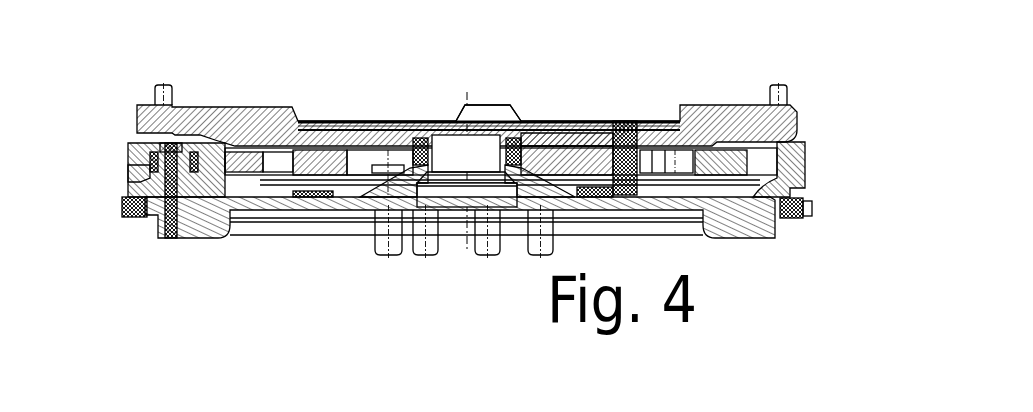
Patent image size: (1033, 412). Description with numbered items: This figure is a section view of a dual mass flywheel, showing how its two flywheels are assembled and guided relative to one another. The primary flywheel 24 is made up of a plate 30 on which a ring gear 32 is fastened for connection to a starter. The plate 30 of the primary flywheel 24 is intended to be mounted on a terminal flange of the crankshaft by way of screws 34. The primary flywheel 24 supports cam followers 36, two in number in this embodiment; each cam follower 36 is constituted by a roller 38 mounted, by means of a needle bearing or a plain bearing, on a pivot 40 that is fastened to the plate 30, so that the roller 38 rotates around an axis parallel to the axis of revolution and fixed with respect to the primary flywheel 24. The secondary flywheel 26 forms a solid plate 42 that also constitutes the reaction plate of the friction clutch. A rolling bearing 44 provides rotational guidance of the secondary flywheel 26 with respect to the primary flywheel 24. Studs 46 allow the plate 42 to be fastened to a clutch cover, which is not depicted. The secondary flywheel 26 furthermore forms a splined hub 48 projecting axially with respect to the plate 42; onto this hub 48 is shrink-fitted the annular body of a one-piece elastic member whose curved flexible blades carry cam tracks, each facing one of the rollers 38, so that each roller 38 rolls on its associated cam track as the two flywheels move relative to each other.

The primary flywheel 24 is at (813, 163).
The secondary flywheel 26 is at (807, 108).
The plate 30 is at (743, 230).
The ring gear 32 is at (812, 208).
The screws 34 is at (380, 243).
The cam followers 36 is at (57, 135).
The roller 38 is at (145, 170).
The pivot 40 is at (150, 134).
The solid plate 42 is at (700, 130).
The rolling bearing 44 is at (513, 140).
The studs 46 is at (157, 99).
The splined hub 48 is at (327, 152).